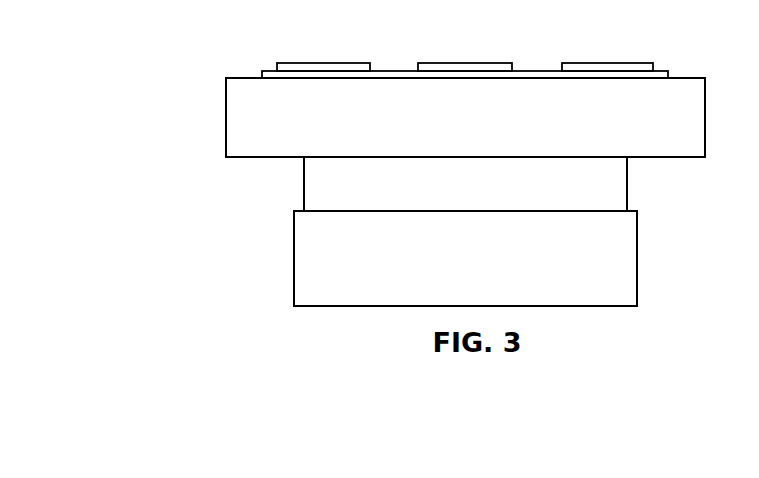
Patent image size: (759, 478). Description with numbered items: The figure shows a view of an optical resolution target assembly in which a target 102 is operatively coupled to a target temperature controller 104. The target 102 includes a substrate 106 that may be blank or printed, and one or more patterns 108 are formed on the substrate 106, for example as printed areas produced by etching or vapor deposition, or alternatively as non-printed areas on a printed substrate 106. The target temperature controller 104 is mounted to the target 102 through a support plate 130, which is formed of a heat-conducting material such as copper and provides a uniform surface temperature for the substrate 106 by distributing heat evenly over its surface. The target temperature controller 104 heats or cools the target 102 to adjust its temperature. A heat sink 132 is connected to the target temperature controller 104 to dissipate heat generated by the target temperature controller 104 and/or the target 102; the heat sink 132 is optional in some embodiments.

The target 102 is at (676, 71).
The target temperature controller 104 is at (636, 179).
The substrate 106 is at (272, 69).
The patterns 108 is at (327, 63).
The support plate 130 is at (226, 123).
The heat sink 132 is at (294, 277).